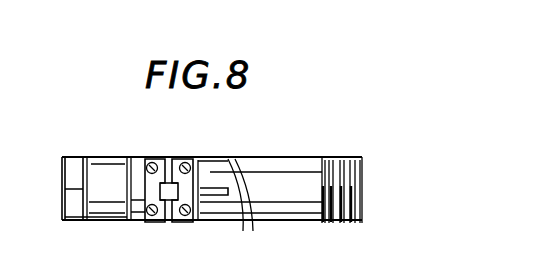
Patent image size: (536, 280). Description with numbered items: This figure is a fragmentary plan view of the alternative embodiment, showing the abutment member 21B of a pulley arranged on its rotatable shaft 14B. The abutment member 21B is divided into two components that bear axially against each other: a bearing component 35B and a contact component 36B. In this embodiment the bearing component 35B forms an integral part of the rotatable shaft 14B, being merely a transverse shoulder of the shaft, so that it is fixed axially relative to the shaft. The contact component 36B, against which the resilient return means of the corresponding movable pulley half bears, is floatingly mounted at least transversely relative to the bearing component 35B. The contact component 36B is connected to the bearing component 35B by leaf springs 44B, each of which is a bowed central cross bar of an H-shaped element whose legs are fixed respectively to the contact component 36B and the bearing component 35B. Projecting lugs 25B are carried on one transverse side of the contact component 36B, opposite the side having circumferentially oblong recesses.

The rotatable shaft 14B is at (338, 160).
The abutment member 21B is at (169, 158).
The bearing component 35B is at (146, 223).
The contact component 36B is at (190, 160).
The leaf springs 44B is at (166, 188).
The projecting lugs 25B is at (251, 207).